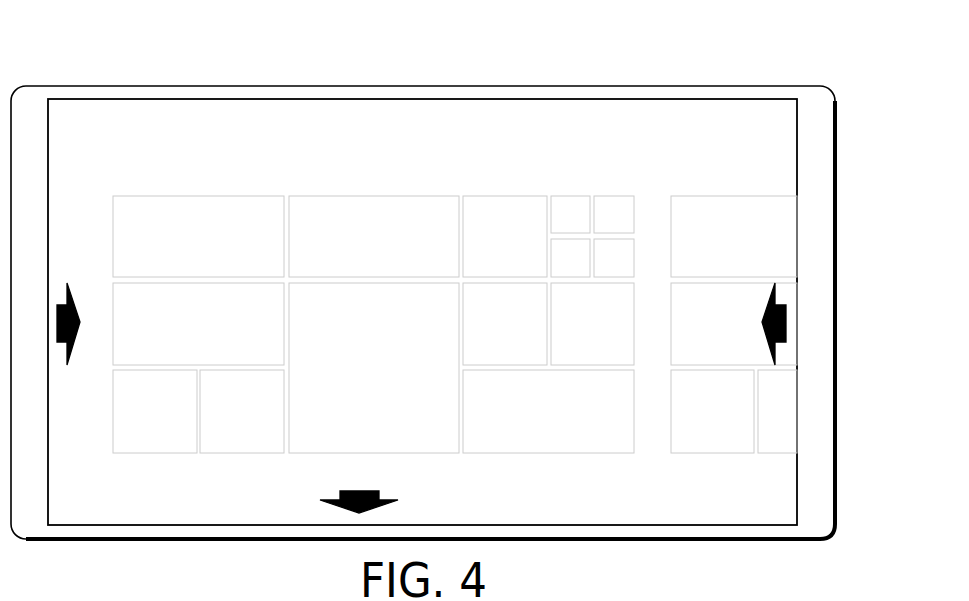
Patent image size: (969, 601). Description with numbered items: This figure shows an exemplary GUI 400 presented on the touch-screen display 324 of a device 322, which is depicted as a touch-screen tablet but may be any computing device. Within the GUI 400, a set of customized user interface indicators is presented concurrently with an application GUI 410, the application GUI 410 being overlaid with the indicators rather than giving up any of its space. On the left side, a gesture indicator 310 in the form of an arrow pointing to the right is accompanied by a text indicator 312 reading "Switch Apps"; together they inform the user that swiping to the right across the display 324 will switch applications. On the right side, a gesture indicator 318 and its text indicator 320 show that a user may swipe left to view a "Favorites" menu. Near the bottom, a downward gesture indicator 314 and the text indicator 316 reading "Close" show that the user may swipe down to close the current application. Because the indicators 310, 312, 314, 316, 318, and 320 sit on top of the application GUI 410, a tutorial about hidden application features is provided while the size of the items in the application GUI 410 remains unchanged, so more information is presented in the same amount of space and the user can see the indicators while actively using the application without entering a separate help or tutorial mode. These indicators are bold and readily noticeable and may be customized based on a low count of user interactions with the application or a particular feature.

The GUI 400 is at (423, 272).
The device 322 is at (657, 86).
The touch-screen display 324 is at (526, 121).
The application GUI 410 is at (357, 177).
The text indicator 312 is at (88, 241).
The gesture indicator 310 is at (77, 305).
The text indicator 320 is at (718, 241).
The gesture indicator 318 is at (768, 303).
The gesture indicator 314 is at (355, 489).
The text indicator 316 is at (458, 486).